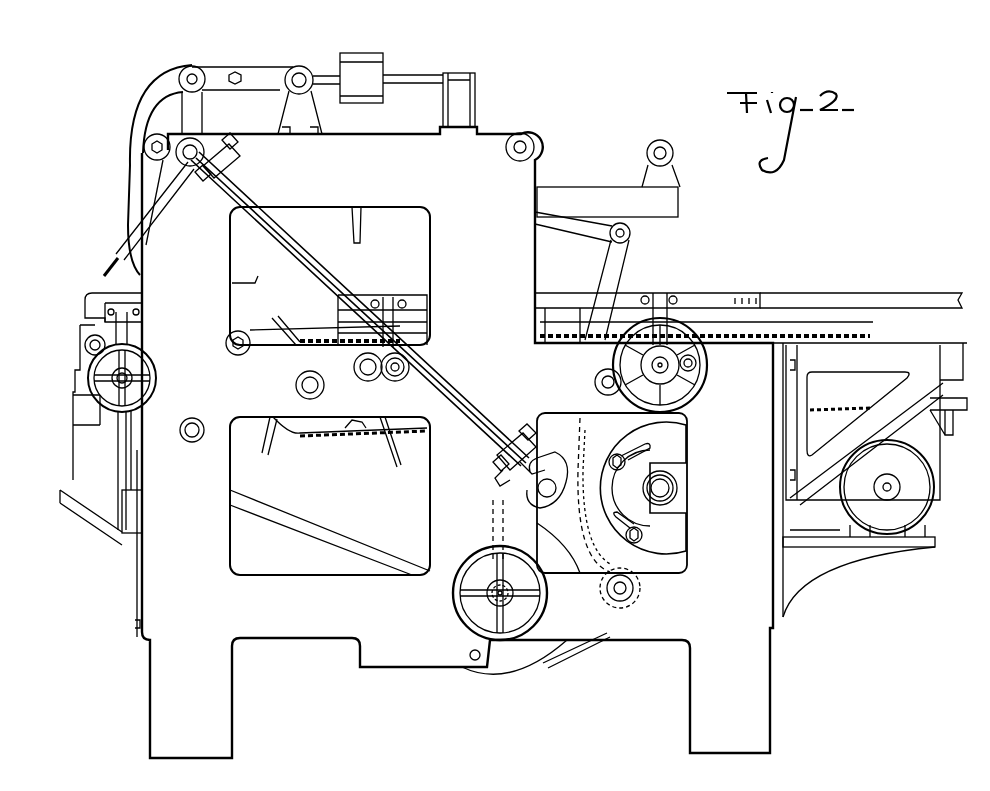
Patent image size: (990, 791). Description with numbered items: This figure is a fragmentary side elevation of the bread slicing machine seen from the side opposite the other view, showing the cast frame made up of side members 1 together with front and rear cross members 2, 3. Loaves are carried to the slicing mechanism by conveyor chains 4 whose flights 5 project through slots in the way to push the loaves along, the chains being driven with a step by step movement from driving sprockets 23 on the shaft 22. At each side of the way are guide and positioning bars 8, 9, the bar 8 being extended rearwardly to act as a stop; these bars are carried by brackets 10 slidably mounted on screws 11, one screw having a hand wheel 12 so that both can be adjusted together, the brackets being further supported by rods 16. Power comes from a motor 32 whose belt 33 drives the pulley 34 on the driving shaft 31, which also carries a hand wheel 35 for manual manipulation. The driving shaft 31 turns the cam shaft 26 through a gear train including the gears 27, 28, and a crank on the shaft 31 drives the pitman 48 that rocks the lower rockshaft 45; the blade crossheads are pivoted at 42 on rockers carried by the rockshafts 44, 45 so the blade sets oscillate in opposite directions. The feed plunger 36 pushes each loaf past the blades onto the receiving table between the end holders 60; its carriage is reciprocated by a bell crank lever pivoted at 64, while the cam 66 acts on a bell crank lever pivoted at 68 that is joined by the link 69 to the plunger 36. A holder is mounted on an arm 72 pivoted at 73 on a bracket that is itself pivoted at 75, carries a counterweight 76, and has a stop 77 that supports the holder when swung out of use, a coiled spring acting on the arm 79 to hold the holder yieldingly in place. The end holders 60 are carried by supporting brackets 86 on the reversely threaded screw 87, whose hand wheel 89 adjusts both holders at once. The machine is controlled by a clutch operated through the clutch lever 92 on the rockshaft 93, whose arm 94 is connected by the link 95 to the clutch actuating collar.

The side members 1 is at (225, 661).
The front cross member 2 is at (778, 578).
The rear cross member 3 is at (140, 556).
The conveyor chains 4 is at (358, 437).
The flights 5 is at (262, 444).
The guide and positioning bar 8 is at (803, 296).
The guide and positioning bar 9 is at (561, 300).
The brackets 10 is at (389, 297).
The screws 11 is at (395, 378).
The hand wheel 12 is at (708, 364).
The rods 16 is at (366, 378).
The shaft 22 is at (298, 382).
The driving sprockets 23 is at (312, 437).
The cam shaft 26 is at (666, 490).
The gear 27 is at (598, 548).
The gear 28 is at (610, 604).
The driving shaft 31 is at (478, 600).
The motor 32 is at (925, 486).
The belt 33 is at (580, 648).
The pulley 34 is at (512, 670).
The hand wheel 35 is at (548, 598).
The plunger 36 is at (338, 236).
The pivot 42 is at (146, 146).
The rockshaft 44 is at (186, 162).
The rockshaft 45 is at (192, 442).
The pitman 48 is at (312, 514).
The holders 60 is at (92, 297).
The pivot 64 is at (598, 388).
The cam 66 is at (668, 552).
The pivot 68 is at (540, 495).
The link 69 is at (563, 236).
The arm 72 is at (134, 122).
The pivot rod 73 is at (190, 66).
The pivot 75 is at (299, 66).
The counterweight 76 is at (364, 60).
The stop 77 is at (235, 72).
The arm 79 is at (196, 112).
The supporting brackets 86 is at (113, 322).
The reversely threaded screw 87 is at (128, 384).
The hand wheel 89 is at (156, 372).
The clutch lever 92 is at (166, 218).
The rockshaft 93 is at (300, 262).
The arm 94 is at (497, 476).
The link 95 is at (490, 516).